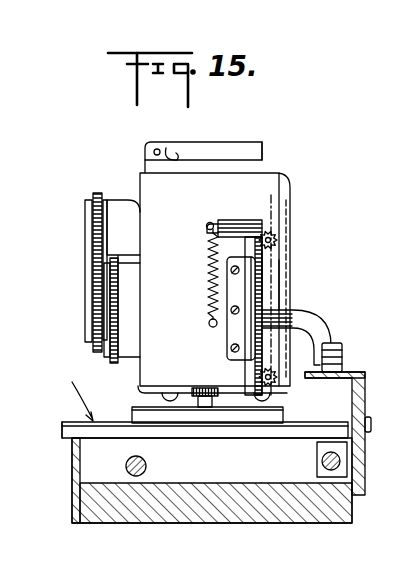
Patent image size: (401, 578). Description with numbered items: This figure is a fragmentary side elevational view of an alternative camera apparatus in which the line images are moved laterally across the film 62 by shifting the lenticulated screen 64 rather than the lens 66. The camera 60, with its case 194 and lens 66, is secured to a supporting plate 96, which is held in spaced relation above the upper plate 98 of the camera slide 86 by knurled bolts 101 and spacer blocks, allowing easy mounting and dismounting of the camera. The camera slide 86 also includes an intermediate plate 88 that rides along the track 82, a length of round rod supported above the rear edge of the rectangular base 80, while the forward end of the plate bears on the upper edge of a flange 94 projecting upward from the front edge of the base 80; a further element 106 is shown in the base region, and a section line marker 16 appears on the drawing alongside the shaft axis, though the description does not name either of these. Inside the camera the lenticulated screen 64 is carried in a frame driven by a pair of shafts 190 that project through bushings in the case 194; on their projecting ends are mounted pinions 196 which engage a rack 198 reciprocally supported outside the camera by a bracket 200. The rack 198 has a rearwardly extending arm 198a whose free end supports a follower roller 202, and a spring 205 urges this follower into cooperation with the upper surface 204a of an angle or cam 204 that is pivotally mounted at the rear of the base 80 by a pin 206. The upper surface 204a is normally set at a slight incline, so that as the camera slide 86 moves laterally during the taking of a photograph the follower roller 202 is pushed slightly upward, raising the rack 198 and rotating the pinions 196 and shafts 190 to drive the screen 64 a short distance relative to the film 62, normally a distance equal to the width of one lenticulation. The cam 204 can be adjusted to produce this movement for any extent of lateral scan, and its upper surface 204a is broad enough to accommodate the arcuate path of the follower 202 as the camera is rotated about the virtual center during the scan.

The shaft 16 is at (282, 210).
The camera 60 is at (142, 180).
The film 62 is at (280, 292).
The lenticulated screen 64 is at (276, 268).
The lens 66 is at (92, 312).
The base 80 is at (163, 508).
The track 82 is at (321, 461).
The camera slide 86 is at (68, 391).
The intermediate plate 88 is at (68, 438).
The flange 94 is at (74, 470).
The supporting plate 96 is at (143, 406).
The upper plate 98 is at (76, 423).
The knurled bolts 101 is at (200, 390).
The pin 106 is at (128, 461).
The shafts 190 is at (276, 238).
The case 194 is at (252, 190).
The pinions 196 is at (278, 243).
The rack 198 is at (252, 222).
The rearwardly extending arm 198a is at (296, 322).
The bracket 200 is at (231, 338).
The follower roller 202 is at (335, 348).
The cam 204 is at (364, 396).
The upper surface 204a is at (354, 376).
The spring 205 is at (207, 298).
The pin 206 is at (372, 424).